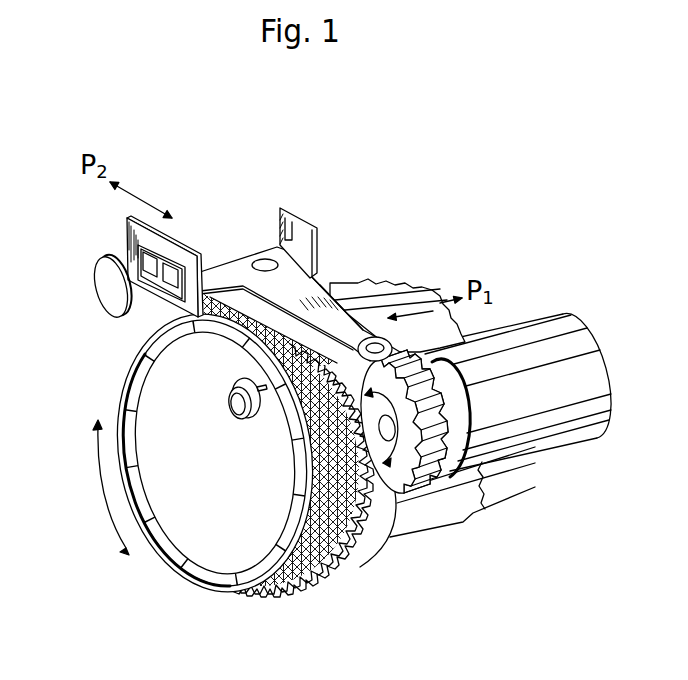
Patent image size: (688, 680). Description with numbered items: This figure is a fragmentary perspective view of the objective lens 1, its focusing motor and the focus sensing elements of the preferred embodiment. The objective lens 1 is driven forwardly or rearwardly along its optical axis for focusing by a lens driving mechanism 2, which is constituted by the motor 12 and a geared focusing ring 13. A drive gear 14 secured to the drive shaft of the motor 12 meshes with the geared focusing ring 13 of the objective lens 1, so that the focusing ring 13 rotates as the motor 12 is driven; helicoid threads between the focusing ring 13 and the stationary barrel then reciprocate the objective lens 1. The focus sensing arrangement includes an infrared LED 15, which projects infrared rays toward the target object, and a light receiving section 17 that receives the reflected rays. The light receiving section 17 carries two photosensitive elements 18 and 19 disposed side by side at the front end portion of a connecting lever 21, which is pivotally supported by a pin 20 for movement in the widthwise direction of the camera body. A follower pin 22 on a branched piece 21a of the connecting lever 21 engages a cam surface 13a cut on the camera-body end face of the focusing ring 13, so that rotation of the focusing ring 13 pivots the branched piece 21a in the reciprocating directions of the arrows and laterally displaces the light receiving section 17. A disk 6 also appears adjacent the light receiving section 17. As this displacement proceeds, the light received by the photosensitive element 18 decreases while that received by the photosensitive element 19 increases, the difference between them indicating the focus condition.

The objective lens 1 is at (213, 463).
The lens driving mechanism 2 is at (405, 472).
The disk 6 is at (98, 280).
The motor 12 is at (492, 474).
The geared focusing ring 13 is at (362, 551).
The cam surface 13a is at (397, 495).
The drive gear 14 is at (437, 483).
The infrared LED 15 is at (233, 418).
The light receiving section 17 is at (109, 304).
The photosensitive element 18 is at (147, 270).
The photosensitive element 19 is at (165, 292).
The pin 20 is at (267, 262).
The connecting lever 21 is at (308, 262).
The branched piece 21a is at (334, 314).
The follower pin 22 is at (375, 343).